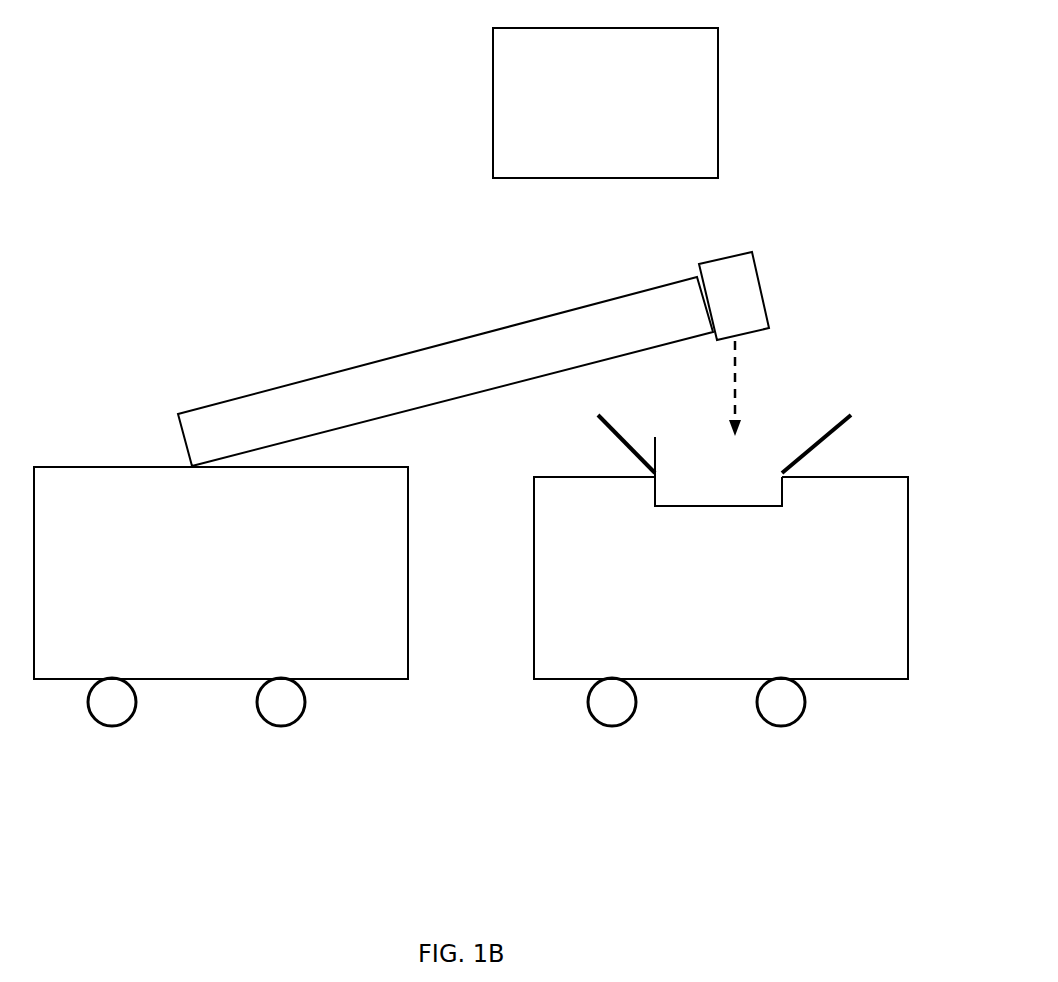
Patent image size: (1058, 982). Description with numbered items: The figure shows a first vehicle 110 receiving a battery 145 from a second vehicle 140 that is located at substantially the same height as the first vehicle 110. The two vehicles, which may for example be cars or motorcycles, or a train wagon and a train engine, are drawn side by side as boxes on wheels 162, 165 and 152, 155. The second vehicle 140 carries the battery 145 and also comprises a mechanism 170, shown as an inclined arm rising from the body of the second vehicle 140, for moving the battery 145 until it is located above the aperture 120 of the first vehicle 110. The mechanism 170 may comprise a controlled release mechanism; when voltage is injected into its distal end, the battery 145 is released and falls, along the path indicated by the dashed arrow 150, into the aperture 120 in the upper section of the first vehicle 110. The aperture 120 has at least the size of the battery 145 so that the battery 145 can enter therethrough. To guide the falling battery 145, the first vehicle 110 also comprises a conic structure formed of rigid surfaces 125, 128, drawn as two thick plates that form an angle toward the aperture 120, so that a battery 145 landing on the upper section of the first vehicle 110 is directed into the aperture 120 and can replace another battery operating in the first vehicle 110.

The first vehicle 110 is at (862, 675).
The aperture 120 is at (707, 480).
The rigid surface 125 is at (603, 442).
The rigid surface 128 is at (835, 440).
The second vehicle 140 is at (510, 63).
The battery 145 is at (763, 297).
The material flow 150 is at (746, 355).
The wheel 152 is at (782, 713).
The wheel 155 is at (613, 707).
The wheel 162 is at (113, 707).
The wheel 165 is at (282, 713).
The mechanism 170 is at (270, 407).